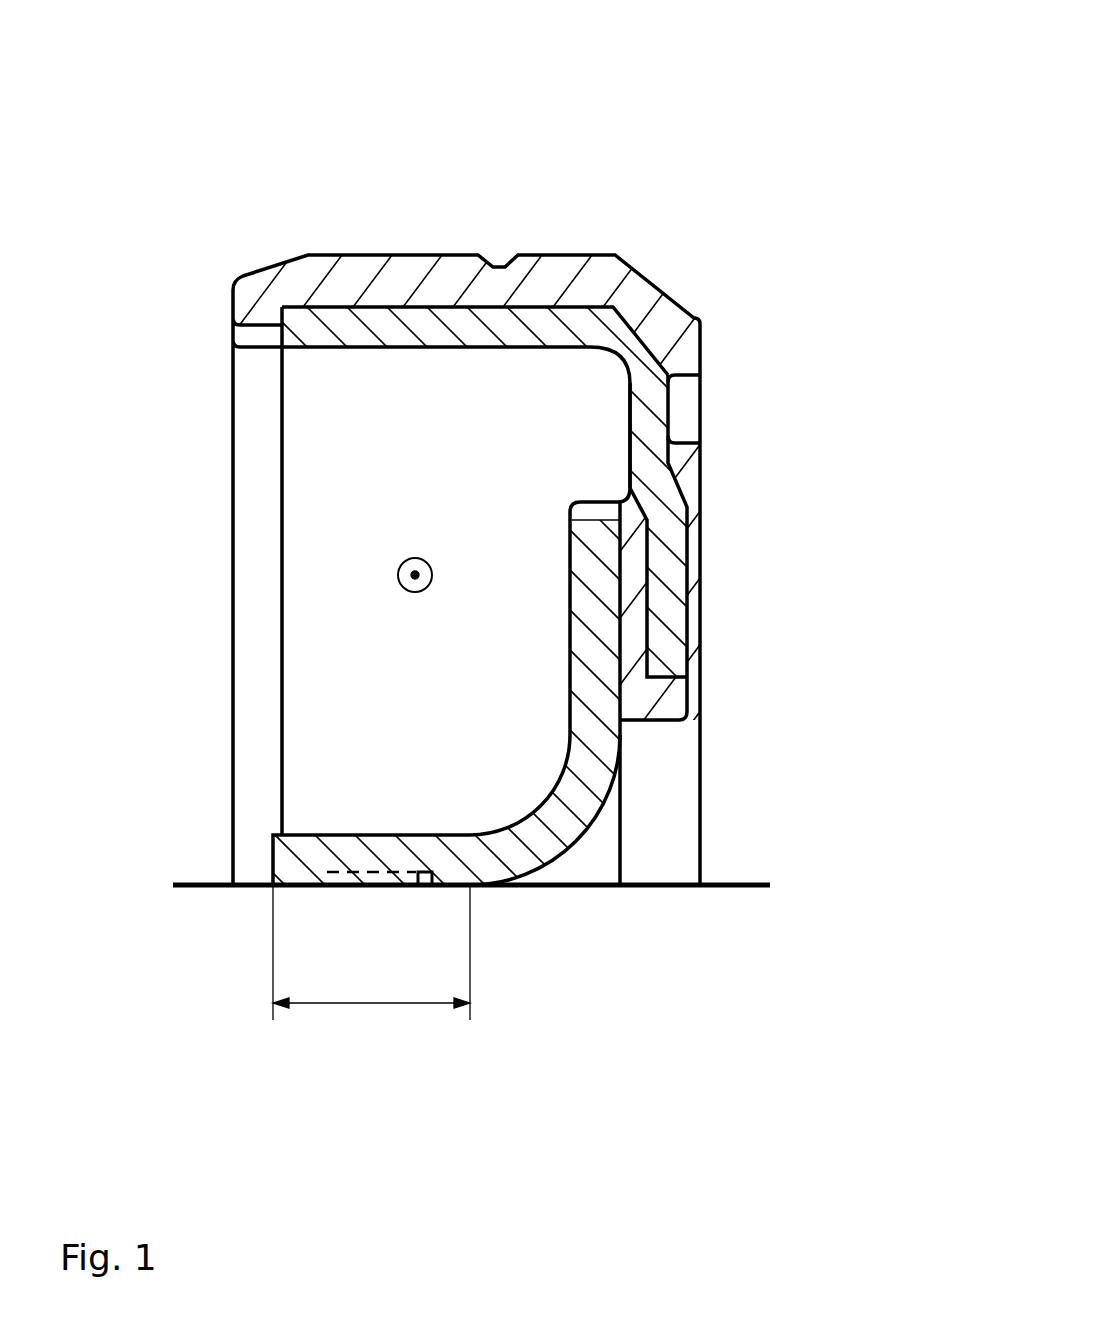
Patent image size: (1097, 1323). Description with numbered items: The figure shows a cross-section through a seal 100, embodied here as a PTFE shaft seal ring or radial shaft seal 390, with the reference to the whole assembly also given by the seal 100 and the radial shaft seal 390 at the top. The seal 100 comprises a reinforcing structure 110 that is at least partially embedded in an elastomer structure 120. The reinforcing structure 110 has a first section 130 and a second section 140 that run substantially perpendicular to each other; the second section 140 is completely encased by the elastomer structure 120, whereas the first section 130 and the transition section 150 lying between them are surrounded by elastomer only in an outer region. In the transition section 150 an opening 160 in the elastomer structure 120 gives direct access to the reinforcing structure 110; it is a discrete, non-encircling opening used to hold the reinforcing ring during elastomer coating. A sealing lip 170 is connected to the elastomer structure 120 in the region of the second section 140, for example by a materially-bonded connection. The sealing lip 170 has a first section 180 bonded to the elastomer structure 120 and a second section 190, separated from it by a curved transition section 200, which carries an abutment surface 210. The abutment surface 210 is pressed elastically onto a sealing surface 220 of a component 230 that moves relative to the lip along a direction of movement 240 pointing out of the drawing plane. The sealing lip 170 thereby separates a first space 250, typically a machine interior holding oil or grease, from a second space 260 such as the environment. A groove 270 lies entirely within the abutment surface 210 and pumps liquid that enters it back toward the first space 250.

The seal 100 is at (695, 33).
The radial shaft seal 390 is at (724, 33).
The reinforcing structure 110 is at (657, 425).
The elastomer structure 120 is at (705, 557).
The first section 130 is at (455, 325).
The second section 140 is at (673, 628).
The transition section 150 is at (630, 332).
The opening 160 is at (688, 393).
The sealing lip 170 is at (600, 783).
The first section 180 is at (605, 697).
The second section 190 is at (325, 848).
The transition section 200 is at (565, 830).
The abutment surface 210 is at (362, 1005).
The sealing surface 220 is at (603, 880).
The component 230 is at (752, 915).
The direction of movement 240 is at (395, 575).
The first space 250 is at (388, 458).
The second space 260 is at (720, 785).
The groove 270 is at (425, 870).